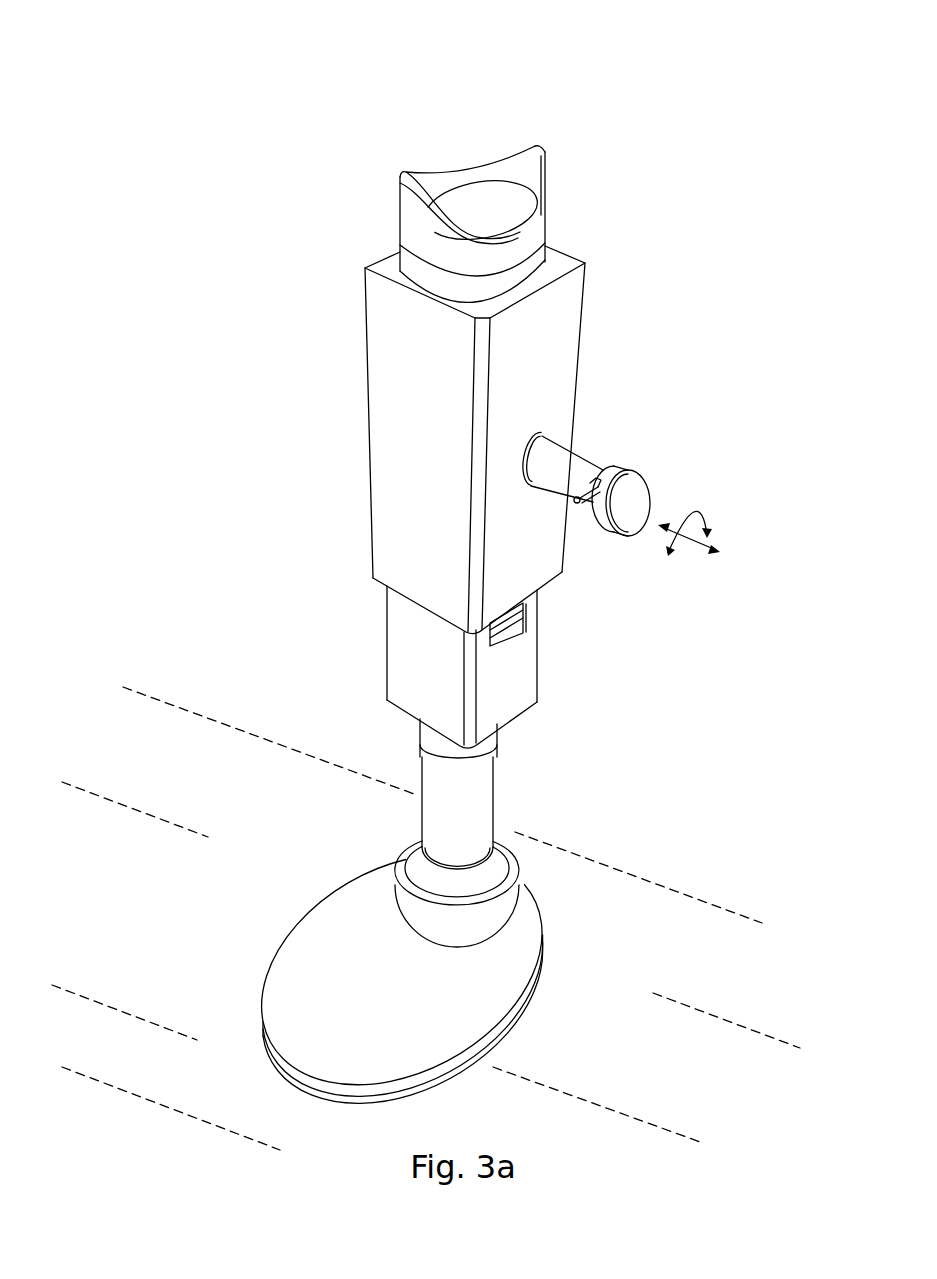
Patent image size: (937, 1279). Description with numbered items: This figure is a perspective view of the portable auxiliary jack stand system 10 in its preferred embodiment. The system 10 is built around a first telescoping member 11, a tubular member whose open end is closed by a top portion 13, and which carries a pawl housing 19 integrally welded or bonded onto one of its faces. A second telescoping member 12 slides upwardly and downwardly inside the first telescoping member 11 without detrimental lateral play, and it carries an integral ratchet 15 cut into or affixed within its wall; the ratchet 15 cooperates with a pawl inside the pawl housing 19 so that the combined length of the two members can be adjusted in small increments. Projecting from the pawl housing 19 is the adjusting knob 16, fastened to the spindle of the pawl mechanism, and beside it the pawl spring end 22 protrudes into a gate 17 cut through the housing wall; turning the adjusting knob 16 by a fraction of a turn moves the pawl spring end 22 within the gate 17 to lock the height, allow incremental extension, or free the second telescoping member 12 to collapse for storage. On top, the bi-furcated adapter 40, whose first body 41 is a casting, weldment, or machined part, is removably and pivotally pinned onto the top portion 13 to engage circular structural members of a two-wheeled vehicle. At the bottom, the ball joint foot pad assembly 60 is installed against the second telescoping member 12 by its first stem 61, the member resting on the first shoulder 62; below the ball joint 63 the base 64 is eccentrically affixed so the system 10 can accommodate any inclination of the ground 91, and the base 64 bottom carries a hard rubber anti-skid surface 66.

The portable auxiliary jack stand system 10 is at (116, 115).
The first telescoping member 11 is at (578, 372).
The second telescoping member 12 is at (410, 668).
The top portion 13 is at (390, 270).
The ratchet 15 is at (510, 632).
The adjusting knob 16 is at (642, 488).
The gate 17 is at (602, 474).
The pawl housing 19 is at (555, 444).
The pawl spring end 22 is at (582, 506).
The bi-furcated adapter 40 is at (560, 111).
The first body 41 is at (530, 237).
The ball joint foot pad assembly 60 is at (560, 859).
The first stem 61 is at (440, 799).
The first shoulder 62 is at (430, 735).
The ball joint 63 is at (423, 870).
The base 64 is at (290, 975).
The anti-skid surface 66 is at (300, 1090).
The ground 91 is at (695, 915).